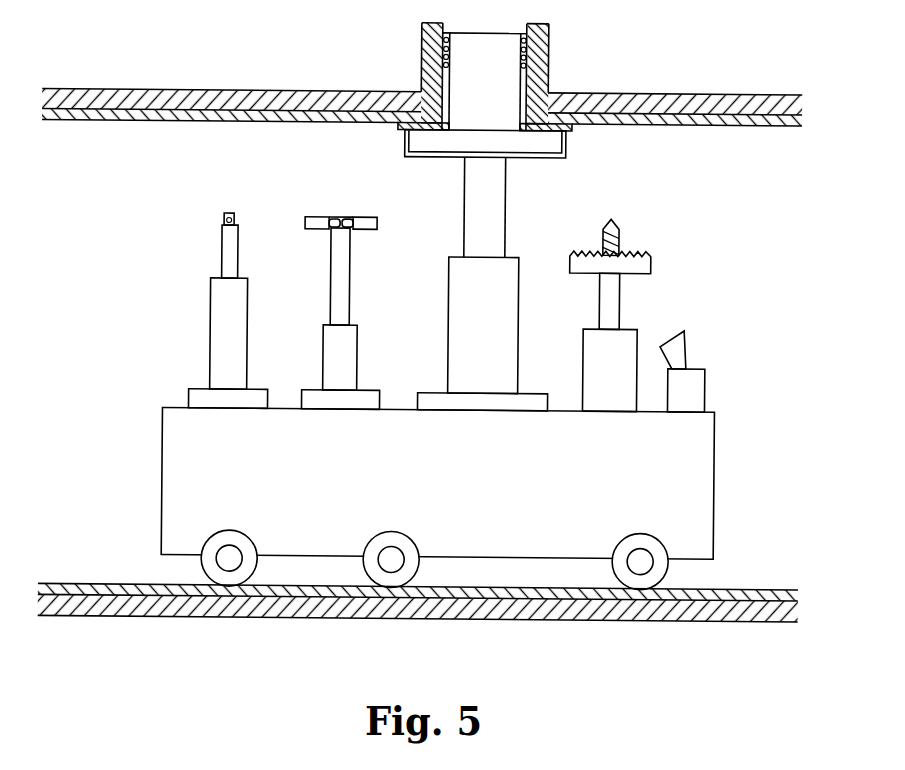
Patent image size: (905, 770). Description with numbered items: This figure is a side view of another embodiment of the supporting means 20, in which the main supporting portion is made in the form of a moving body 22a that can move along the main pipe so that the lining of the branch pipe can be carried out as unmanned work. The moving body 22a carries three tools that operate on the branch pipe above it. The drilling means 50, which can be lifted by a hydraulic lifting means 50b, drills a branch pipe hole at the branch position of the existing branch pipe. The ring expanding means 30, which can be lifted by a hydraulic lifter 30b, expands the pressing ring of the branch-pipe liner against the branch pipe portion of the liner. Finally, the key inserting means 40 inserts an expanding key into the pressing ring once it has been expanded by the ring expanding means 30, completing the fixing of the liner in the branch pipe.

The supporting means 20 is at (514, 209).
The moving body 22a is at (715, 487).
The ring expanding means 30 is at (325, 285).
The hydraulic lifter 30b is at (357, 352).
The key inserting means 40 is at (198, 302).
The drilling means 50 is at (675, 316).
The hydraulic lifting means 50b is at (636, 345).